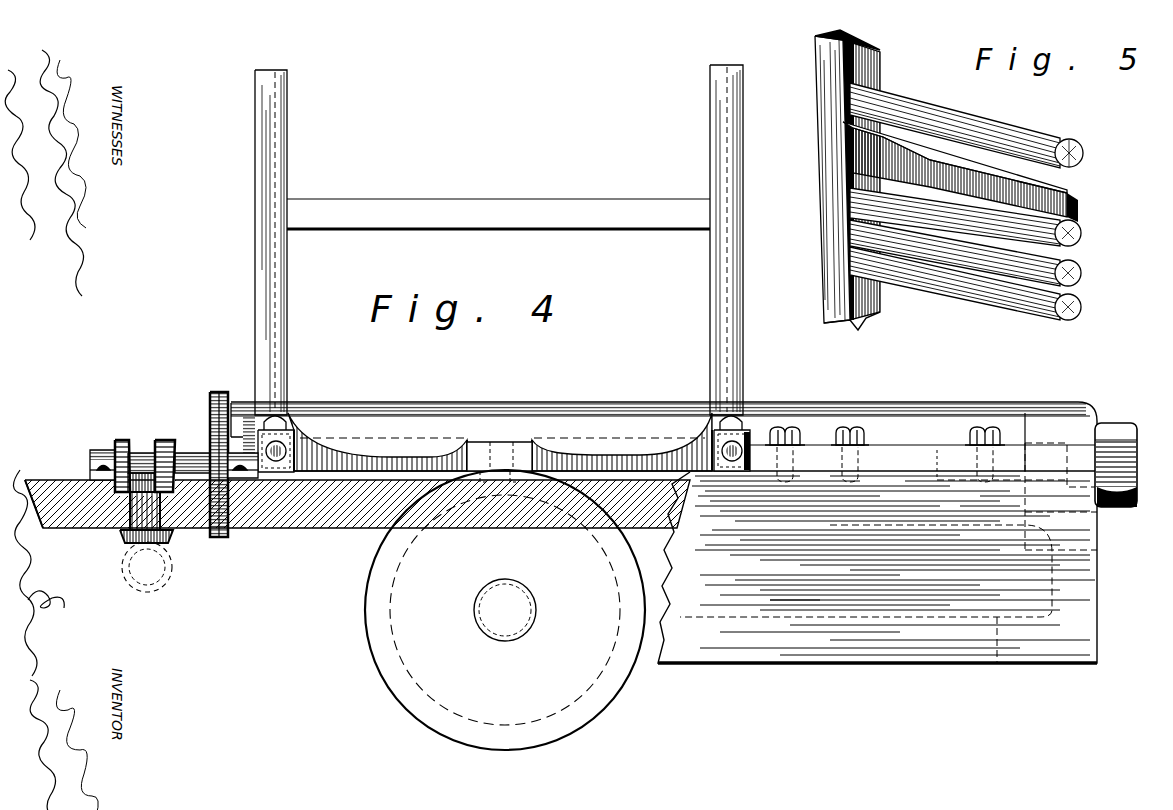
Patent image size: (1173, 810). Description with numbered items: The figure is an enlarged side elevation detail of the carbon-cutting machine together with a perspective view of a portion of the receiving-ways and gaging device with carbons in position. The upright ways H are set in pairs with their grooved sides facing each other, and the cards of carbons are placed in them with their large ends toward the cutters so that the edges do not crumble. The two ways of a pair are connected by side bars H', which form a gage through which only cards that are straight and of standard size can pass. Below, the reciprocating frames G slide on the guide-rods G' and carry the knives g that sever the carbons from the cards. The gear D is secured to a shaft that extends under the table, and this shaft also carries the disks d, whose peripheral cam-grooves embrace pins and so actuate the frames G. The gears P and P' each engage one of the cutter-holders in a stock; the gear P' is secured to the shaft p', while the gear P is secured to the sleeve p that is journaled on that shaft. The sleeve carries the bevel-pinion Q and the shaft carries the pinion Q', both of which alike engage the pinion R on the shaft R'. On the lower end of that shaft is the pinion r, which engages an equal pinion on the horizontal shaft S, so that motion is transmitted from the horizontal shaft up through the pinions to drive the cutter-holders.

In FIG. 4, the upright ways H is at (496, 240).
In FIG. 5, the upright ways H is at (862, 180).
In FIG. 4, the side bars H' is at (498, 214).
In FIG. 5, the side bars H' is at (974, 201).
In FIG. 4, the reciprocating frames G is at (500, 442).
In FIG. 4, the guide-rods G' is at (513, 444).
In FIG. 4, the knives g is at (493, 492).
In FIG. 4, the pinion R is at (357, 503).
In FIG. 4, the shaft R' is at (200, 483).
In FIG. 4, the pinion r is at (125, 534).
In FIG. 4, the horizontal shaft S is at (147, 567).
In FIG. 4, the bevel-pinion Q is at (165, 429).
In FIG. 4, the pinion Q' is at (118, 440).
In FIG. 4, the sleeve p is at (192, 441).
In FIG. 4, the shaft p' is at (141, 443).
In FIG. 4, the gear P is at (224, 428).
In FIG. 4, the gear P' is at (259, 362).
In FIG. 4, the gear D is at (522, 615).
In FIG. 4, the disks d is at (505, 610).